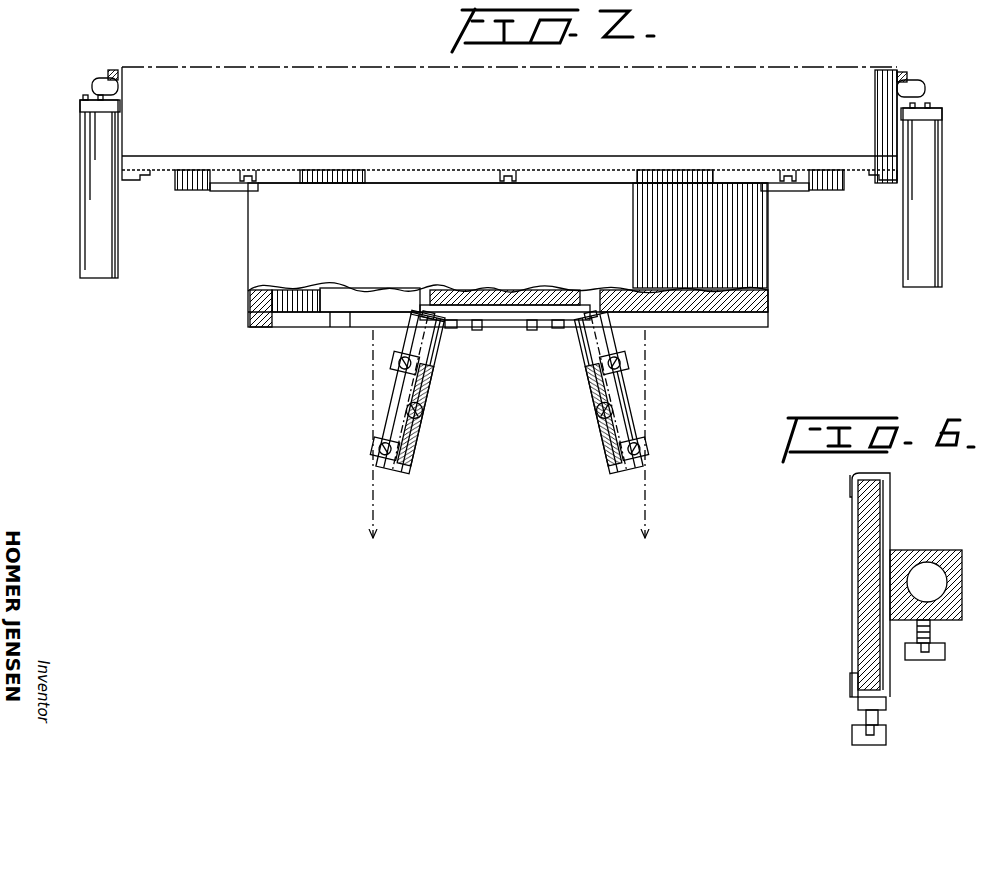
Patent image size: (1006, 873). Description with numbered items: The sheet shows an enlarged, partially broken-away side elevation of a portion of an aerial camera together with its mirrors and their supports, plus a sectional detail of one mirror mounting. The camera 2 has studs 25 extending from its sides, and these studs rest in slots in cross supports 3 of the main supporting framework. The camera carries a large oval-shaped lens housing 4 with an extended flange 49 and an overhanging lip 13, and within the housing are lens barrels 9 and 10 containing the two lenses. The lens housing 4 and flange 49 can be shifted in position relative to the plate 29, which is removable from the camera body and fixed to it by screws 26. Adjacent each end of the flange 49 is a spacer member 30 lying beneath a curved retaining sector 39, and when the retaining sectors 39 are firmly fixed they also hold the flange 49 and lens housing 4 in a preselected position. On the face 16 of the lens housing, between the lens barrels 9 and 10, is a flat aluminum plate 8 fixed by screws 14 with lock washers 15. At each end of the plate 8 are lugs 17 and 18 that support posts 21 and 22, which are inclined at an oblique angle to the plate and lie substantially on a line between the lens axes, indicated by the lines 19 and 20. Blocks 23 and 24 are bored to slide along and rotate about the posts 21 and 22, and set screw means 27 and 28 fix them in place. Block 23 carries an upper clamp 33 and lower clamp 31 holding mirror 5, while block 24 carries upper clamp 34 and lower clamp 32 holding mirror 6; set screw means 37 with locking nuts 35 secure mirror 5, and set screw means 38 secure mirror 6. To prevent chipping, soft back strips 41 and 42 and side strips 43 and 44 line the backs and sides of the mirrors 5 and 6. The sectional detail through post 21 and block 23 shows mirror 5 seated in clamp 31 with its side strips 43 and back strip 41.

In FIG. 2, the camera 2 is at (858, 66).
In FIG. 2, the cross supports 3 is at (79, 142).
In FIG. 2, the lens housing 4 is at (768, 276).
In FIG. 2, the mirror 5 is at (404, 345).
In FIG. 6, the mirror 5 is at (857, 604).
In FIG. 2, the mirror 6 is at (610, 352).
In FIG. 2, the flat plate 8 is at (502, 322).
In FIG. 2, the lens barrel 9 is at (332, 312).
In FIG. 2, the lens barrel 10 is at (688, 327).
In FIG. 2, the overhanging lip 13 is at (306, 327).
In FIG. 2, the screws 14 is at (478, 330).
In FIG. 2, the lock washers 15 is at (452, 330).
In FIG. 2, the face of the lens housing 16 is at (278, 327).
In FIG. 2, the lug or boss 17 is at (440, 346).
In FIG. 2, the lug or boss 18 is at (565, 338).
In FIG. 2, the axis of lens 11 19 is at (373, 446).
In FIG. 2, the axis of lens 12 20 is at (648, 446).
In FIG. 2, the post 21 is at (432, 373).
In FIG. 6, the post 21 is at (942, 580).
In FIG. 2, the post 22 is at (582, 376).
In FIG. 2, the block 23 is at (412, 449).
In FIG. 6, the block 23 is at (962, 552).
In FIG. 2, the block 24 is at (602, 452).
In FIG. 2, the studs 25 is at (95, 82).
In FIG. 2, the screws 26 is at (246, 170).
In FIG. 2, the set screw means 27 is at (418, 424).
In FIG. 6, the set screw means 27 is at (945, 654).
In FIG. 2, the set screw means 28 is at (606, 424).
In FIG. 2, the plate 29 is at (675, 162).
In FIG. 2, the spacer member 30 is at (180, 190).
In FIG. 2, the lower clamp 31 is at (380, 448).
In FIG. 6, the lower clamp 31 is at (891, 515).
In FIG. 2, the lower clamp 32 is at (646, 463).
In FIG. 2, the upper clamp 33 is at (393, 389).
In FIG. 2, the upper clamp 34 is at (622, 393).
In FIG. 6, the locking nuts 35 is at (887, 703).
In FIG. 2, the set screw means 37 is at (400, 383).
In FIG. 6, the set screw means 37 is at (887, 735).
In FIG. 2, the set screw means 38 is at (617, 379).
In FIG. 2, the curved retaining sector 39 is at (230, 191).
In FIG. 2, the back strip 41 is at (395, 430).
In FIG. 6, the back strip 41 is at (884, 540).
In FIG. 2, the back strip 42 is at (635, 441).
In FIG. 2, the side strips 43 is at (414, 337).
In FIG. 6, the side strips 43 is at (878, 480).
In FIG. 2, the side strips 44 is at (630, 425).
In FIG. 2, the flange 49 is at (622, 175).